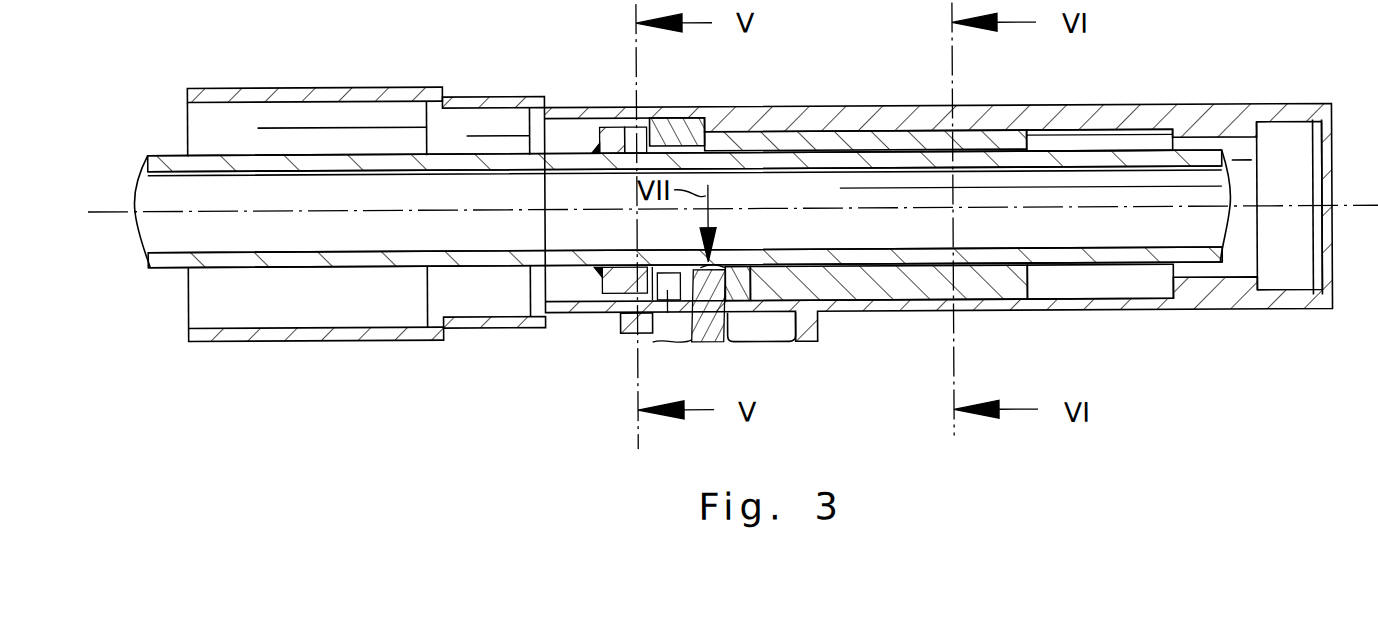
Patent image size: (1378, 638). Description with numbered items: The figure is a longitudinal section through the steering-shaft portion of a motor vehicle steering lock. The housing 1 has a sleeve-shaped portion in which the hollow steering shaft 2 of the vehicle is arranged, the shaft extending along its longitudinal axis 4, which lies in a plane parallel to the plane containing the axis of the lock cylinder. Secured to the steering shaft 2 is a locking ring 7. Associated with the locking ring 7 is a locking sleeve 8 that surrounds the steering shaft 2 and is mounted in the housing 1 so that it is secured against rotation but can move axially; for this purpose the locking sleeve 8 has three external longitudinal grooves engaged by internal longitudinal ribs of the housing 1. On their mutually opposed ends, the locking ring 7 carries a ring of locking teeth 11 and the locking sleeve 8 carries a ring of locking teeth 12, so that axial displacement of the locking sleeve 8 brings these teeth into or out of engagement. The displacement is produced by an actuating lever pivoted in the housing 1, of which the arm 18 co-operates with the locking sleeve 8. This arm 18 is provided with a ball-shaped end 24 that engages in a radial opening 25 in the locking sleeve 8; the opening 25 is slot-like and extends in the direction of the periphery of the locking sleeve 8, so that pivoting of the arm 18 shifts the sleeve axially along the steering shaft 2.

The housing 1 is at (1239, 124).
The steering shaft 2 is at (168, 193).
The longitudinal axis of the steering shaft 4 is at (97, 214).
The locking ring 7 is at (612, 285).
The locking sleeve 8 is at (1009, 300).
The locking teeth 11 is at (635, 141).
The locking teeth 12 is at (668, 295).
The arm 18 is at (717, 329).
The ball-shaped end 24 is at (739, 293).
The radial opening 25 is at (718, 271).